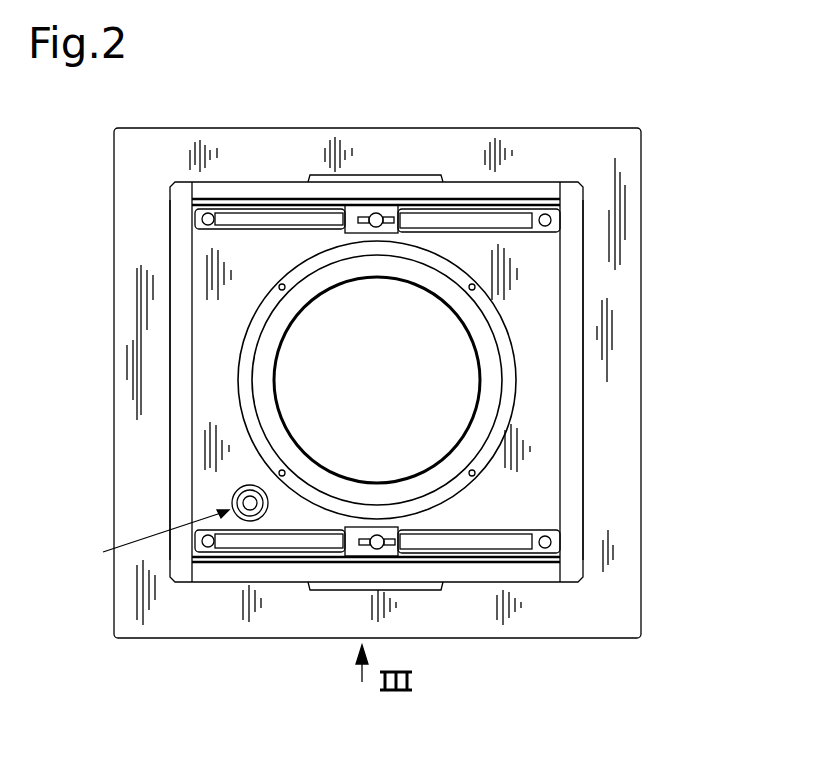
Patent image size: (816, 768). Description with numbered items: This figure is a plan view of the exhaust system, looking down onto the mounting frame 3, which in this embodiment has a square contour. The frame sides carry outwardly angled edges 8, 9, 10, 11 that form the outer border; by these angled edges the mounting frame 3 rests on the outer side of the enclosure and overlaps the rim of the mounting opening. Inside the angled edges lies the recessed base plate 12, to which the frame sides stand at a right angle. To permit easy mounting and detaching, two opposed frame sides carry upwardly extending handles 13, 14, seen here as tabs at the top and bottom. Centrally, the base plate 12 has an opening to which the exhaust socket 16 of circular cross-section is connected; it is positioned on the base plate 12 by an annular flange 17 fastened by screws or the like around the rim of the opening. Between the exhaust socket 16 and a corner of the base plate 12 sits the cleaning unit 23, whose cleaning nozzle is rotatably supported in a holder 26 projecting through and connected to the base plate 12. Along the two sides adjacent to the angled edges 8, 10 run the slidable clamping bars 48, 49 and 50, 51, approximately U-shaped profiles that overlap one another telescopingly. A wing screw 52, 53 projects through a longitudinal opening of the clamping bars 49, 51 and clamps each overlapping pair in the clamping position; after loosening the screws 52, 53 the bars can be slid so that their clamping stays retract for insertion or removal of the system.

The mounting frame 3 is at (571, 290).
The angled edge 8 is at (210, 188).
The angled edge 9 is at (175, 363).
The angled edge 10 is at (228, 575).
The angled edge 11 is at (573, 498).
The base plate 12 is at (223, 280).
The handle 13 is at (427, 174).
The handle 14 is at (443, 589).
The exhaust socket 16 is at (475, 417).
The annular flange 17 is at (257, 310).
The cleaning unit 23 is at (142, 542).
The holder 26 is at (233, 492).
The slidable clamping bar 48 is at (500, 223).
The slidable clamping bar 49 is at (253, 218).
The slidable clamping bar 50 is at (527, 548).
The slidable clamping bar 51 is at (292, 543).
The wing screw 52 is at (378, 213).
The wing screw 53 is at (412, 527).